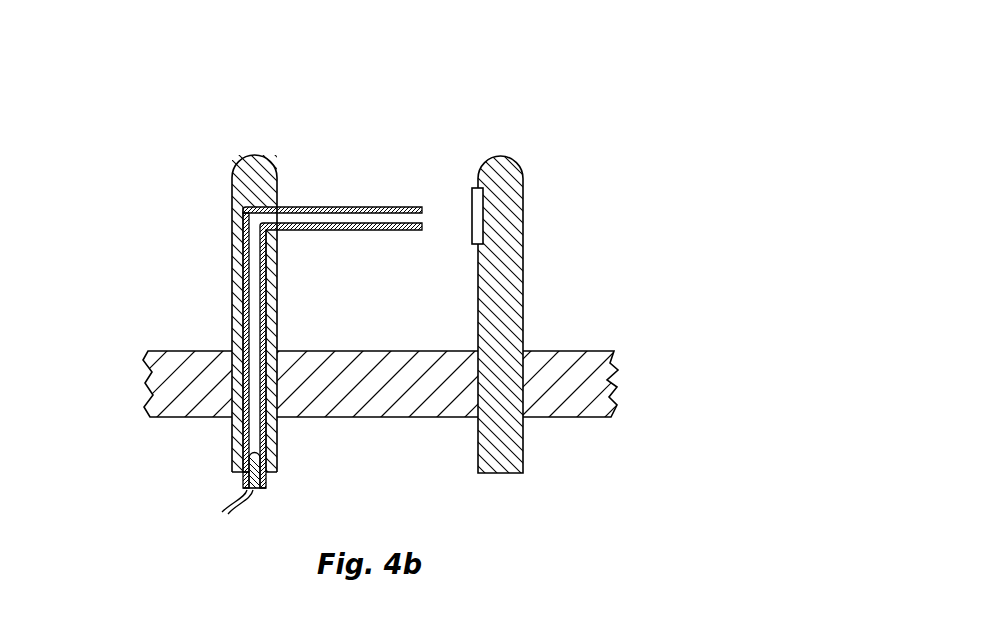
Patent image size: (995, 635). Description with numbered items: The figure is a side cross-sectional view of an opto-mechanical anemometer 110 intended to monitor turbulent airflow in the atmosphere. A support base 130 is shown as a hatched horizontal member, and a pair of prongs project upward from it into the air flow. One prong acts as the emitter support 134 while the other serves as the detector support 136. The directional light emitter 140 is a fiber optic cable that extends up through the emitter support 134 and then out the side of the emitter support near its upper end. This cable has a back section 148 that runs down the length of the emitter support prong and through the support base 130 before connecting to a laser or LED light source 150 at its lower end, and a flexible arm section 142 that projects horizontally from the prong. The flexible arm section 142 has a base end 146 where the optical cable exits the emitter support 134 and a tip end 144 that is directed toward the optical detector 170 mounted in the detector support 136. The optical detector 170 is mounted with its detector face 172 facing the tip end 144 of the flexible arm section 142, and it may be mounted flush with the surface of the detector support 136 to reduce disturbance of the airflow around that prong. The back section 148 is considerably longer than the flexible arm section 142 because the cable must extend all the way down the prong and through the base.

The opto-mechanical anemometer 110 is at (665, 85).
The support base 130 is at (617, 368).
The emitter support 134 is at (232, 260).
The detector support 136 is at (523, 183).
The directional light emitter 140 is at (327, 140).
The flexible arm section 142 is at (345, 231).
The tip end 144 is at (410, 205).
The base end 146 is at (296, 205).
The back section 148 is at (243, 437).
The light source 150 is at (268, 483).
The optical detector 170 is at (466, 168).
The detector face 172 is at (472, 243).